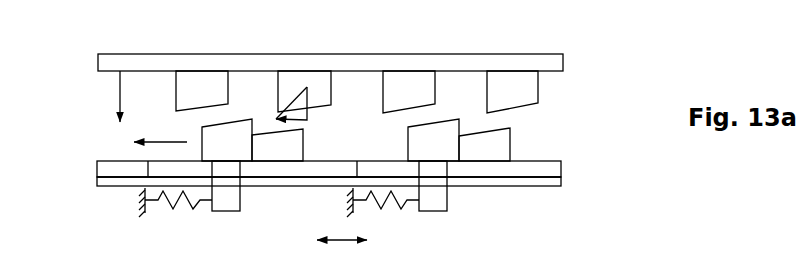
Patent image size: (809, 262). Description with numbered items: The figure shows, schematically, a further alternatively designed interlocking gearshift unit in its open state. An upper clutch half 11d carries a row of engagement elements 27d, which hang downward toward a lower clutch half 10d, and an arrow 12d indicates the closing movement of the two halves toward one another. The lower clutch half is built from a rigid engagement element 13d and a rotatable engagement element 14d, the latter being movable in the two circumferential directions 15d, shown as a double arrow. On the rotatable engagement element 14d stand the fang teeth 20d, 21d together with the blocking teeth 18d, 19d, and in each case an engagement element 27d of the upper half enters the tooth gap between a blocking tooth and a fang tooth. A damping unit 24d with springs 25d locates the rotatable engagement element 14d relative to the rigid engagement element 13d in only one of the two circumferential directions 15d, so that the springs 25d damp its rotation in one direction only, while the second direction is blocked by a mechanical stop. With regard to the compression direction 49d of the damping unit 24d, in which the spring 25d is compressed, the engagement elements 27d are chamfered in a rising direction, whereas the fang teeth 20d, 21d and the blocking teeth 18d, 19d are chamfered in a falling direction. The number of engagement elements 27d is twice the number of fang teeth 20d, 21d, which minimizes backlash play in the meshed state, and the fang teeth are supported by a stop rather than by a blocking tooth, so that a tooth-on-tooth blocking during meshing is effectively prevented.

The bottom carrier 10d is at (575, 169).
The top carrier 11d is at (576, 60).
The pressing direction 12d is at (119, 94).
The rigid engagement element 13d is at (483, 148).
The rotatable engagement element 14d is at (473, 182).
The circumferential directions 15d is at (338, 238).
The blocking tooth 18d is at (305, 148).
The blocking tooth 19d is at (512, 148).
The fang tooth 20d is at (199, 129).
The fang tooth 21d is at (454, 119).
The damping unit 24d is at (116, 199).
The spring 25d is at (178, 207).
The engagement element 27d is at (230, 90).
The compression direction 49d is at (160, 142).